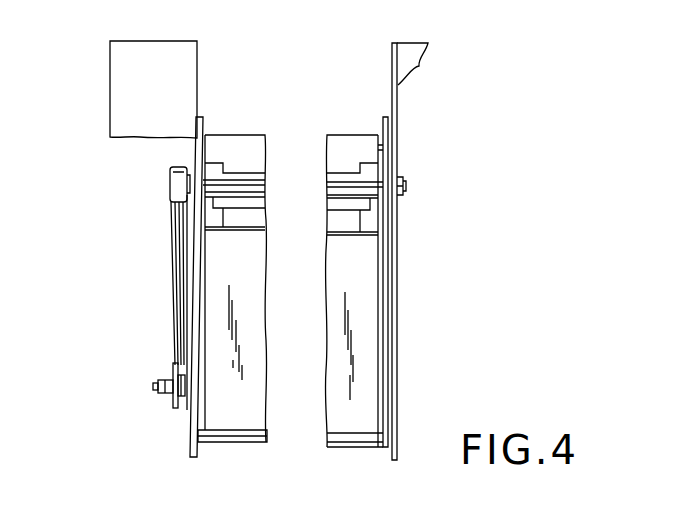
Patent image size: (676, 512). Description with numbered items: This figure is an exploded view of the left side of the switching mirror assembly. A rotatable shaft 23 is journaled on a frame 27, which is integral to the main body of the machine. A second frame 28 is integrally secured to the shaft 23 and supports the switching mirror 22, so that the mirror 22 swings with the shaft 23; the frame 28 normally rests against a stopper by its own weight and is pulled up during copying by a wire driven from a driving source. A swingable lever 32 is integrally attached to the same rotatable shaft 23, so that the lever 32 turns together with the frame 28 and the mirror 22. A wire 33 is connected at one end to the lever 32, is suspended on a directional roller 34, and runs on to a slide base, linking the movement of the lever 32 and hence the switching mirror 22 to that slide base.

The switching mirror 22 is at (218, 281).
The rotatable shaft 23 is at (404, 185).
The frame 27 is at (116, 92).
The frame 28 is at (389, 220).
The swingable lever 32 is at (180, 218).
The wire 33 is at (178, 408).
The directional roller 34 is at (176, 398).